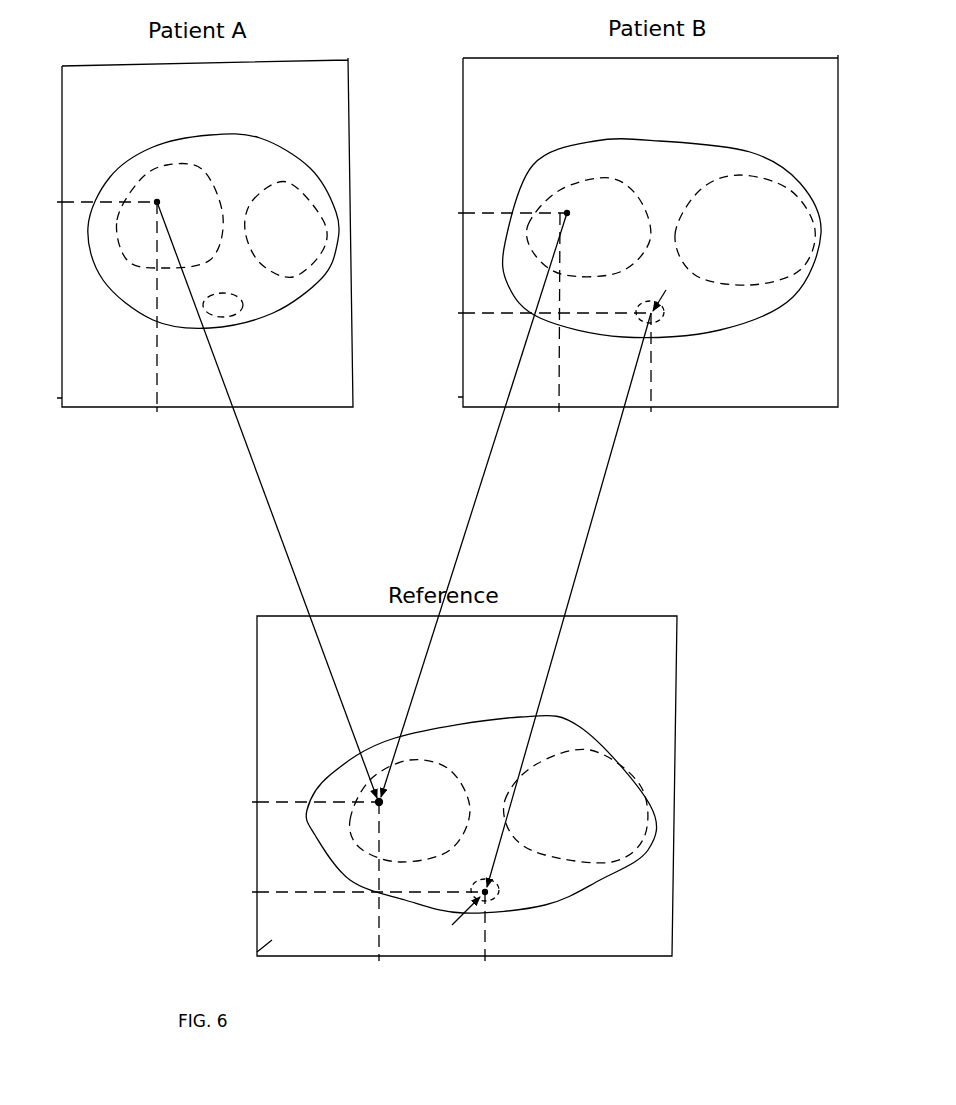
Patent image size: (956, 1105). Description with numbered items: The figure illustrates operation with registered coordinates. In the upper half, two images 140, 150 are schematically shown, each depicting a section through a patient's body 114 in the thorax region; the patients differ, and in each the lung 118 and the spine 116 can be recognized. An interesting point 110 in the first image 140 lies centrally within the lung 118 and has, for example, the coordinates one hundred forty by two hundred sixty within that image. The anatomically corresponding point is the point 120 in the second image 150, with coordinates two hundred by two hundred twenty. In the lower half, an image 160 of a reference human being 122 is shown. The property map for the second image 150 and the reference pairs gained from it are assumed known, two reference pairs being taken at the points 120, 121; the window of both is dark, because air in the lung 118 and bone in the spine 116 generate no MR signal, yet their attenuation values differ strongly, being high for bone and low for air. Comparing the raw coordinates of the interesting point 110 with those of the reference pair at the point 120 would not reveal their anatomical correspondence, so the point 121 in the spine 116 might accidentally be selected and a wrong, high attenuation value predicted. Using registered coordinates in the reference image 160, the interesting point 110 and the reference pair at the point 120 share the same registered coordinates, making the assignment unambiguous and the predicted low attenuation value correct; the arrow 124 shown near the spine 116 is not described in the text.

The interesting point 110 is at (161, 203).
The patient's body 114 is at (260, 138).
The spine 116 is at (241, 298).
The lung 118 is at (221, 214).
The anatomically corresponding point 120 is at (384, 802).
The second reference pair point 121 is at (538, 630).
The reference human being 122 is at (582, 721).
The displacement arrow in patient B 124 is at (661, 289).
The first image 140 is at (350, 62).
The second image 150 is at (782, 48).
The image of the reference human being 160 is at (680, 660).